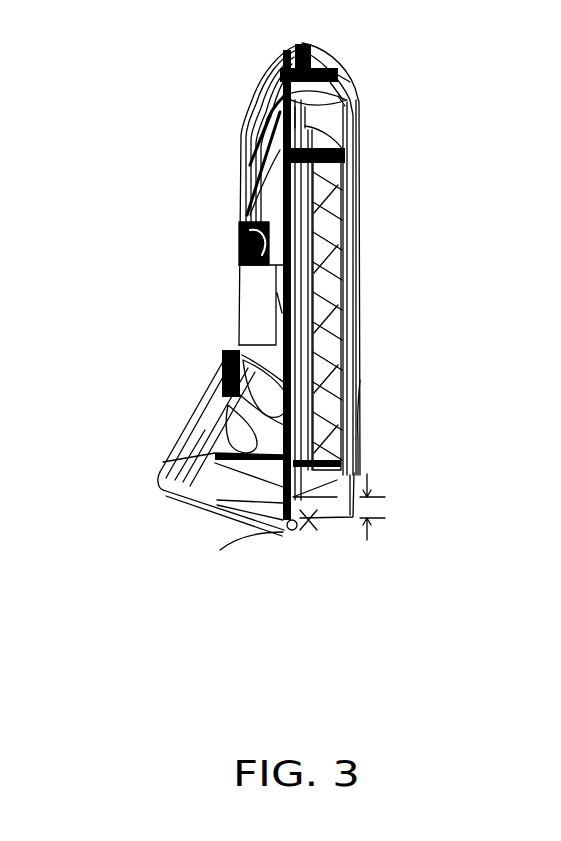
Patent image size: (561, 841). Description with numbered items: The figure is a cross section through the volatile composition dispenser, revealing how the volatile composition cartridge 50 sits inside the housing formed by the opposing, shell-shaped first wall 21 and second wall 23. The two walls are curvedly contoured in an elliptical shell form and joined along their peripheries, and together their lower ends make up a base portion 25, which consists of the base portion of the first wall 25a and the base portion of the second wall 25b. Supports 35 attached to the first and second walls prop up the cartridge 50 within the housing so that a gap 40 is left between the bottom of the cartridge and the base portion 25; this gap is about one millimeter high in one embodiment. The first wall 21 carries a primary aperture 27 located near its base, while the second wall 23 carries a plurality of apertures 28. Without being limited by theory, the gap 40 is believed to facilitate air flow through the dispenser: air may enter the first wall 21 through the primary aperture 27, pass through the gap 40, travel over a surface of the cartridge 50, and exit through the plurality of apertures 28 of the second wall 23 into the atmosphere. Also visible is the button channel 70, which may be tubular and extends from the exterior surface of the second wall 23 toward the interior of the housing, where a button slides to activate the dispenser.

The first wall 21 is at (350, 80).
The second wall 23 is at (267, 63).
The volatile composition cartridge 50 is at (350, 205).
The primary aperture 27 is at (358, 468).
The gap 40 is at (381, 495).
The button channel 70 is at (253, 348).
The plurality of apertures 28 is at (165, 478).
The base portion 25 is at (293, 522).
The base portion of the first wall 25a is at (312, 525).
The base portion of the second wall 25b is at (236, 564).
The supports 35 is at (313, 522).